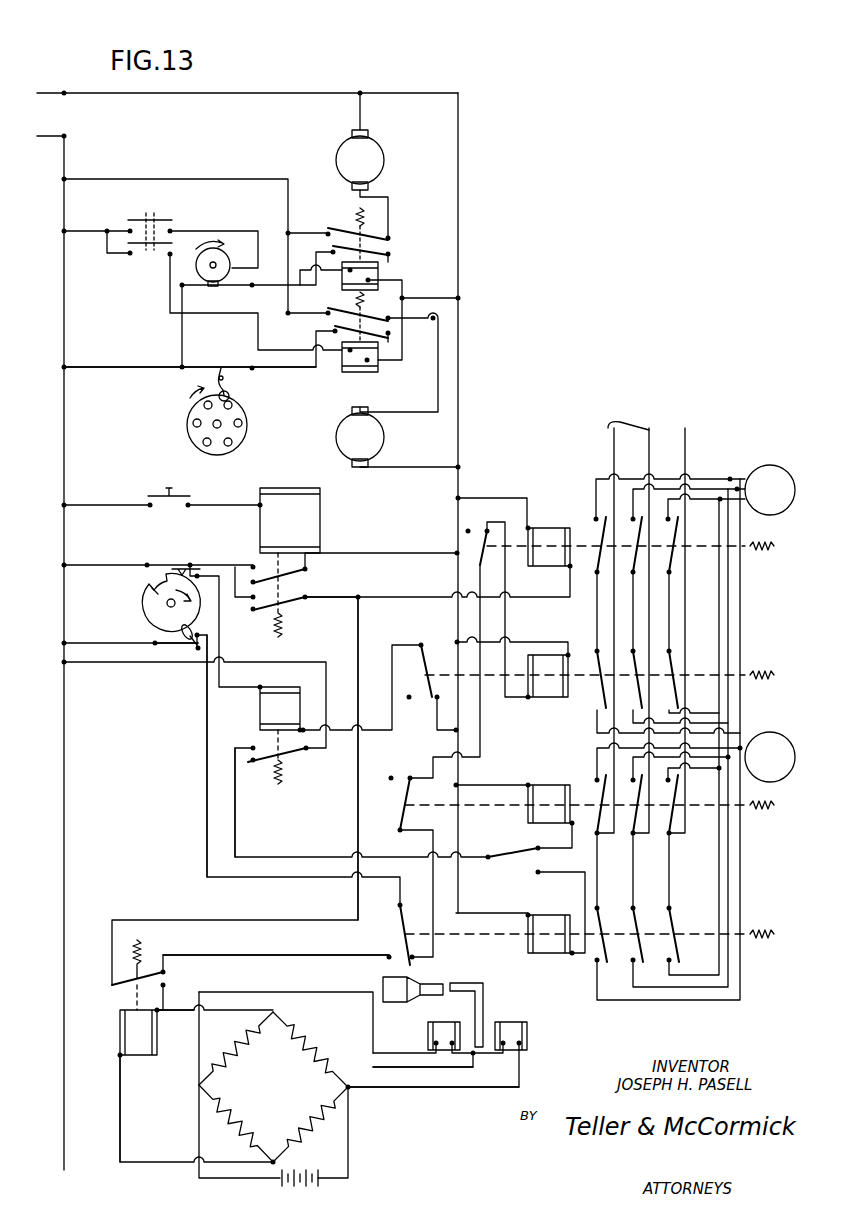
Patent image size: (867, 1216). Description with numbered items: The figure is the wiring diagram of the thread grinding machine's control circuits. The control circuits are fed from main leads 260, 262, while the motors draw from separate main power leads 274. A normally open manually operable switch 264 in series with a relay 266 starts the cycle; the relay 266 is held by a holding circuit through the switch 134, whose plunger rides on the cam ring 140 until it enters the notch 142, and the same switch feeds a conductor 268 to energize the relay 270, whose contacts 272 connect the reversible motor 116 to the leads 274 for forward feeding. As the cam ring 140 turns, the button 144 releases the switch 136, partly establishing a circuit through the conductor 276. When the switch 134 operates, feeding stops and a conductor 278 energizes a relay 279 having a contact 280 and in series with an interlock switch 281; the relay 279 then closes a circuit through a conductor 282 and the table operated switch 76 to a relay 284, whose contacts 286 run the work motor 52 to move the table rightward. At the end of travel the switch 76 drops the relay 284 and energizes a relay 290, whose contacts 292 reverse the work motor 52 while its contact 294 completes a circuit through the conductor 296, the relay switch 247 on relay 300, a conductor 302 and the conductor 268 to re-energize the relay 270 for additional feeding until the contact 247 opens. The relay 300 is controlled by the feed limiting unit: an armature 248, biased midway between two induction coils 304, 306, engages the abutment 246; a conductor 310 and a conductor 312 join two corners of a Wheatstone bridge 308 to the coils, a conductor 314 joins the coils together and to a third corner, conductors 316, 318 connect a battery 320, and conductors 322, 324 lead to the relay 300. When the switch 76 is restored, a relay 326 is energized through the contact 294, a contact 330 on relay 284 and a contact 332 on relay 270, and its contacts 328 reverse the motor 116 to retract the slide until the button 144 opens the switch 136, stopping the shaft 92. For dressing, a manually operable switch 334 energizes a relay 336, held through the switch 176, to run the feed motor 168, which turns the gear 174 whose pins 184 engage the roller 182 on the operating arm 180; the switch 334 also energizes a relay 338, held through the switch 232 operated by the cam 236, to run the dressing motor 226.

The main lead 262 is at (62, 92).
The main lead 260 is at (63, 258).
The manually operable switch 334 is at (132, 220).
The cam 236 is at (228, 260).
The switch 232 is at (240, 290).
The motor 226 is at (385, 150).
The relay 338 is at (342, 280).
The switch 176 is at (246, 366).
The operating arm 180 is at (228, 390).
The roller 182 is at (230, 398).
The pins 184 is at (193, 427).
The gear 174 is at (248, 428).
The relay 336 is at (342, 366).
The motor 168 is at (384, 440).
The manually operable switch 264 is at (150, 494).
The relay 266 is at (262, 540).
The switch 134 is at (172, 568).
The notch 142 is at (152, 586).
The cam ring 140 is at (145, 598).
The shaft 92 is at (167, 606).
The button 144 is at (193, 628).
The conductor 278 is at (224, 642).
The switch 136 is at (176, 650).
The conductor 268 is at (406, 596).
The contact 332 is at (484, 528).
The relay 270 is at (548, 540).
The main power leads 274 is at (612, 430).
The reversible motor 116 is at (766, 470).
The contacts 272 is at (597, 572).
The relay 326 is at (545, 655).
The contacts 328 is at (597, 668).
The relay 279 is at (262, 716).
The interlock switch 281 is at (426, 696).
The conductor 276 is at (206, 772).
The contact 280 is at (266, 770).
The conductor 282 is at (236, 836).
The conductor 302 is at (356, 788).
The contact 330 is at (402, 812).
The relay 284 is at (548, 790).
The table operated switch 76 is at (504, 853).
The work motor 52 is at (778, 752).
The contacts 286 is at (597, 833).
The relay 290 is at (545, 920).
The contacts 292 is at (597, 922).
The contact 294 is at (400, 930).
The conductor 296 is at (262, 960).
The relay switch 247 is at (124, 990).
The abutment 246 is at (430, 988).
The armature 248 is at (480, 1010).
The relay 300 is at (128, 1030).
The conductor 322 is at (172, 1018).
The conductor 310 is at (305, 987).
The induction coil 304 is at (428, 1040).
The induction coil 306 is at (520, 1036).
The conductor 324 is at (118, 1090).
The Wheatstone bridge 308 is at (274, 1087).
The conductor 316 is at (198, 1136).
The battery 320 is at (310, 1170).
The conductor 318 is at (348, 1148).
The conductor 314 is at (404, 1068).
The conductor 312 is at (424, 1090).